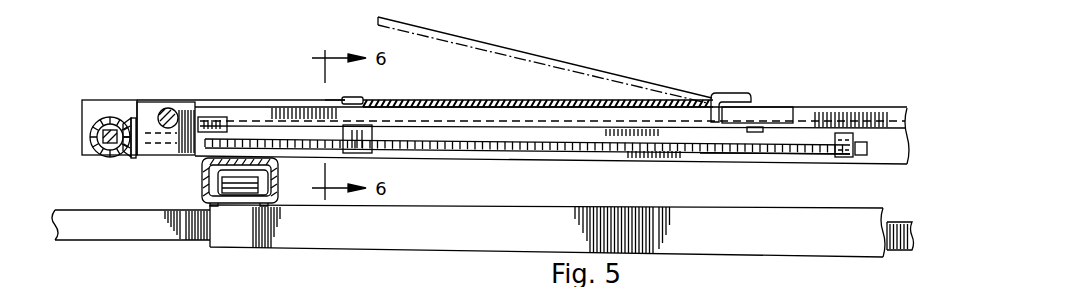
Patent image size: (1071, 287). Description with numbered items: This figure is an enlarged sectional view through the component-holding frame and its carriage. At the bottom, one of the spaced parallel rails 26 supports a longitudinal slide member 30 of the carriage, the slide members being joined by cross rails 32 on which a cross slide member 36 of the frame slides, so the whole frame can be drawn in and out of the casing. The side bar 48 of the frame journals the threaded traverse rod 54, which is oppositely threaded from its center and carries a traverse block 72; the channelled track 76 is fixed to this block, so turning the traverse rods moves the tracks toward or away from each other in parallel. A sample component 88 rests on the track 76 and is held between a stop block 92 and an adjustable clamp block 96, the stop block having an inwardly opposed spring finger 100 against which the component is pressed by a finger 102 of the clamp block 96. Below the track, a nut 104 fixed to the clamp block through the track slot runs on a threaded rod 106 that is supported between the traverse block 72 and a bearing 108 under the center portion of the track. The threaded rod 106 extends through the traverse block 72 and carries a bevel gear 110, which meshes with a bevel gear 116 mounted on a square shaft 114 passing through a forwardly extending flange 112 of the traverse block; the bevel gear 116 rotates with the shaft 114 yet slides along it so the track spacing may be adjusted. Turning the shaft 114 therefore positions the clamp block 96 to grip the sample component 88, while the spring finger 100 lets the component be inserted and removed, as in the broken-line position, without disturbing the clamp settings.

The rail 26 is at (115, 233).
The slide member 30 is at (630, 211).
The cross rail 32 is at (265, 193).
The cross slide member 36 is at (200, 180).
The side bar 48 is at (567, 155).
The traverse rod 54 is at (171, 111).
The traverse block 72 is at (152, 108).
The track 76 is at (246, 108).
The sample component 88 is at (468, 66).
The stop block 92 is at (771, 107).
The clamp block 96 is at (338, 107).
The spring finger 100 is at (712, 96).
The finger 102 is at (345, 99).
The nut 104 is at (372, 152).
The threaded rod 106 is at (772, 156).
The bearing 108 is at (842, 158).
The bevel gear 110 is at (128, 116).
The flange 112 is at (97, 103).
The shaft 114 is at (100, 135).
The bevel gear 116 is at (91, 148).